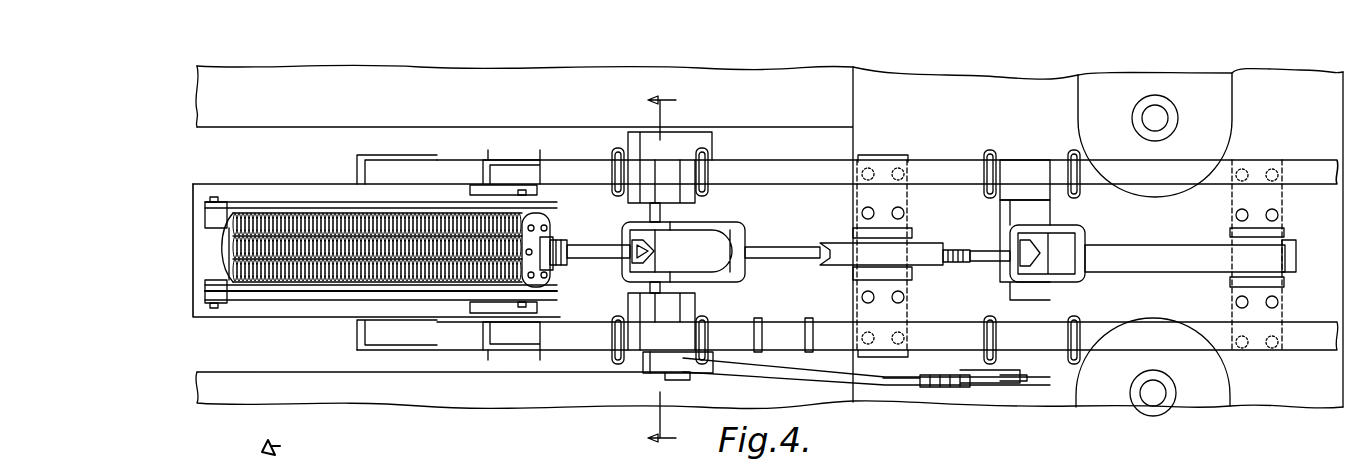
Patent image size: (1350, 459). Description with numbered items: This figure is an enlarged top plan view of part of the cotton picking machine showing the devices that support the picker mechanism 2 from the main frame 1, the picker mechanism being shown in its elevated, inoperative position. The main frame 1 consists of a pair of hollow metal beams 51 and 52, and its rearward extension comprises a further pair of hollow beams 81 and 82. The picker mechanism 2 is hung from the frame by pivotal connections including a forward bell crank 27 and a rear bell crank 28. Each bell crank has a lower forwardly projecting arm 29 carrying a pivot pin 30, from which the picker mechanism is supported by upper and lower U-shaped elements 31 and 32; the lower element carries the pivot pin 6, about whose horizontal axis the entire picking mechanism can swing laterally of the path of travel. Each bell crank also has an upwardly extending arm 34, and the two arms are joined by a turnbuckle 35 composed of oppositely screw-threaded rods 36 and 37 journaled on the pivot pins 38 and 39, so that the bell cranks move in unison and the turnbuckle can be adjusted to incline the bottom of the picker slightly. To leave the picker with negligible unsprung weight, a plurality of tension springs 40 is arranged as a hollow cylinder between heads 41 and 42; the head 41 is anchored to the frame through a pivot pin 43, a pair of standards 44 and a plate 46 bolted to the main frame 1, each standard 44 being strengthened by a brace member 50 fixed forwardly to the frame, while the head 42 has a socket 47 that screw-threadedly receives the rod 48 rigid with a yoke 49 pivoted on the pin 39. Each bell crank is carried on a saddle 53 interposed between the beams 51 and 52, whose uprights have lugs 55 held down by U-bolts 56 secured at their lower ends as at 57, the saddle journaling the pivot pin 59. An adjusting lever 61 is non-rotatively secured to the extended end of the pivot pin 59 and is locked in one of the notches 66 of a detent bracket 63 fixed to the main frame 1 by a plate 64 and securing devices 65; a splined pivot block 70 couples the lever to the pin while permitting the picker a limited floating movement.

The main frame 1 is at (533, 350).
The picker mechanism 2 is at (1285, 410).
The pivot pin 6 is at (1308, 258).
The bell crank 27 is at (1188, 246).
The bell crank 28 is at (815, 266).
The forwardly projecting arm 29 is at (802, 250).
The pivot pin 30 is at (895, 290).
The upper U-shaped element 31 is at (1232, 284).
The lower U-shaped element 32 is at (1290, 275).
The upwardly extending arm 34 is at (745, 252).
The turnbuckle 35 is at (930, 250).
The screw-threaded rod 36 is at (985, 256).
The screw-threaded rod 37 is at (792, 242).
The pivot pin 38 is at (1048, 200).
The pivot pin 39 is at (705, 246).
The tension springs 40 is at (316, 284).
The head 41 is at (213, 198).
The head 42 is at (207, 306).
The pivot pin 43 is at (223, 320).
The standard 44 is at (258, 304).
The plate 46 is at (385, 180).
The socket 47 is at (548, 240).
The rod 48 is at (566, 264).
The yoke 49 is at (582, 246).
The brace member 50 is at (258, 203).
The hollow metal beam 51 is at (843, 170).
The hollow metal beam 52 is at (590, 344).
The saddle 53 is at (648, 200).
The lugs 55 is at (676, 165).
The U-bolts 56 is at (610, 332).
The lower ends of U-bolts 57 is at (628, 352).
The pivot pin 59 is at (655, 352).
The adjusting lever 61 is at (790, 366).
The detent bracket 63 is at (880, 380).
The plate 64 is at (695, 373).
The securing devices 65 is at (812, 330).
The notches 66 is at (958, 385).
The pivot block 70 is at (665, 340).
The hollow beam 81 is at (290, 197).
The hollow beam 82 is at (268, 303).